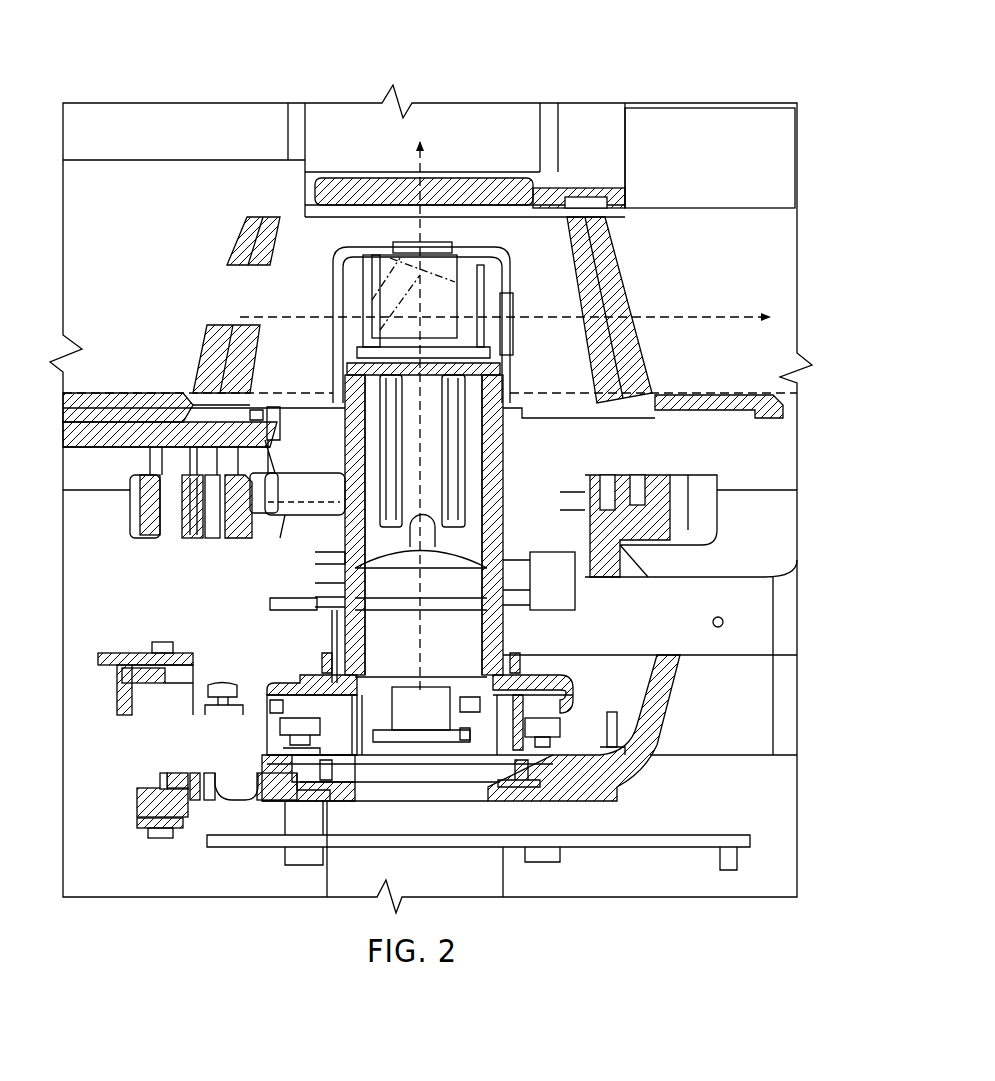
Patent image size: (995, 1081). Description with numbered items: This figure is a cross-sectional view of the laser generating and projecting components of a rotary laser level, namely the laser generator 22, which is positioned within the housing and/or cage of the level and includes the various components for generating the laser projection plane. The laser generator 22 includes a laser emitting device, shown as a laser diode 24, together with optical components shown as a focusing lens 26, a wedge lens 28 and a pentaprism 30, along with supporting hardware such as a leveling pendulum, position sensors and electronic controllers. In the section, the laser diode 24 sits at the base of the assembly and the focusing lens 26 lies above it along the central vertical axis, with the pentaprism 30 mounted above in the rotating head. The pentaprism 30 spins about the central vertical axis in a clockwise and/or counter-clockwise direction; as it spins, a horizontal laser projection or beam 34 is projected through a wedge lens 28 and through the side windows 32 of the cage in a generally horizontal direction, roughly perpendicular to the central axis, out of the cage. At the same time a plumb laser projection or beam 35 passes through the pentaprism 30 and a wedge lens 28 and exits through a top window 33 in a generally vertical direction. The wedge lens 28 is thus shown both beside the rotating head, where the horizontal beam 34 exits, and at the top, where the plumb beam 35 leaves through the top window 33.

The laser generator 22 is at (197, 41).
The laser diode 24 is at (380, 711).
The focusing lens 26 is at (350, 580).
The wedge lens 28 is at (386, 242).
The pentaprism 30 is at (348, 290).
The side windows 32 is at (607, 272).
The top window 33 is at (541, 184).
The horizontal laser projection 34 is at (743, 316).
The plumb laser projection 35 is at (390, 245).